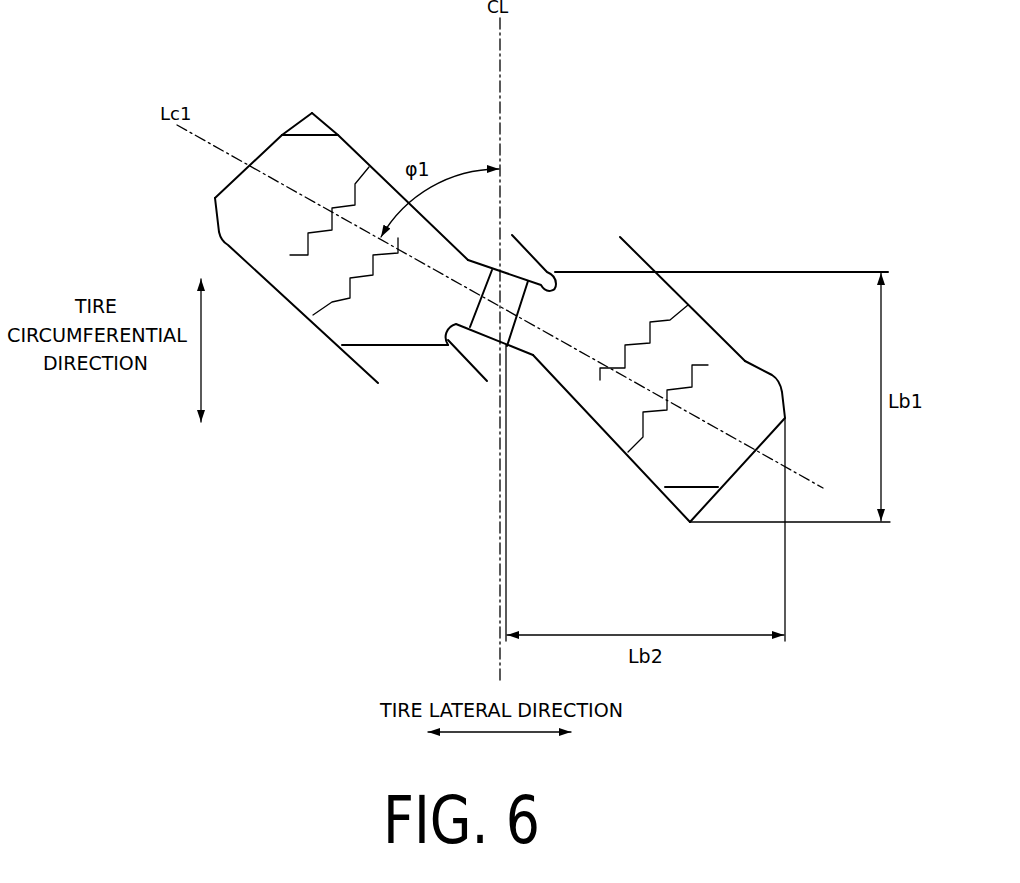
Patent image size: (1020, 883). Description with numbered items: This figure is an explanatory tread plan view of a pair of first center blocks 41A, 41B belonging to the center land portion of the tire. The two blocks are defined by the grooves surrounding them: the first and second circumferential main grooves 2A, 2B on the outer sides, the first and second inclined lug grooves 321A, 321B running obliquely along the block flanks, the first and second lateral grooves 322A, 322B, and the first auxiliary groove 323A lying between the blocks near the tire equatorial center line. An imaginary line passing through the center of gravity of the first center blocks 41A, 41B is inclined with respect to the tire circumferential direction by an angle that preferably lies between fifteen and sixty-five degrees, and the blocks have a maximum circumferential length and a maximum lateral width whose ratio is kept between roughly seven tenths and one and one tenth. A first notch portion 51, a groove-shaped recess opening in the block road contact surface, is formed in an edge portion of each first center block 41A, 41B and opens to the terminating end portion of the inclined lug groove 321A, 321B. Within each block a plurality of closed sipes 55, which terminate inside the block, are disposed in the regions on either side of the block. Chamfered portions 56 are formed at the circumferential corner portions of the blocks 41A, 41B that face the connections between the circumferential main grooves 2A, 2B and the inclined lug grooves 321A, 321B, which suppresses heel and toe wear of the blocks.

The first circumferential main groove 2A is at (197, 223).
The second circumferential main groove 2B is at (803, 422).
The first center block 41A is at (656, 262).
The first center block 41B is at (277, 134).
The first notch portion 51 is at (545, 270).
The closed sipe 55 is at (696, 314).
The chamfered portion 56 is at (308, 118).
The first inclined lug groove 321A is at (380, 150).
The second inclined lug groove 321B is at (592, 440).
The first lateral groove 322A is at (582, 247).
The second lateral groove 322B is at (390, 363).
The first auxiliary groove 323A is at (483, 323).